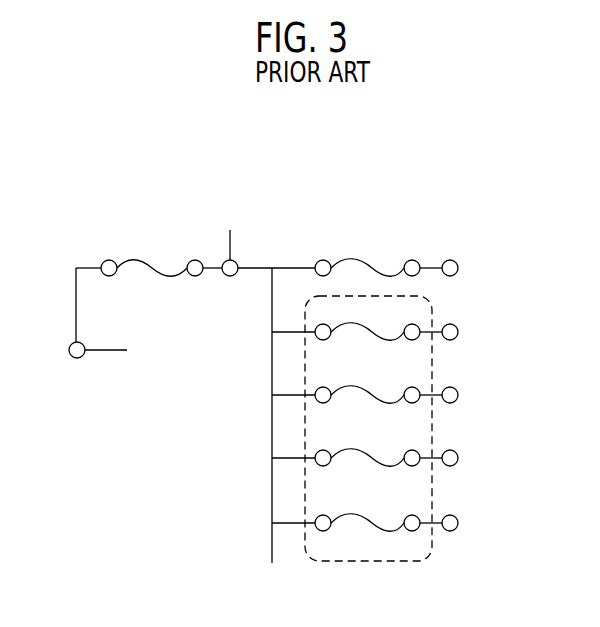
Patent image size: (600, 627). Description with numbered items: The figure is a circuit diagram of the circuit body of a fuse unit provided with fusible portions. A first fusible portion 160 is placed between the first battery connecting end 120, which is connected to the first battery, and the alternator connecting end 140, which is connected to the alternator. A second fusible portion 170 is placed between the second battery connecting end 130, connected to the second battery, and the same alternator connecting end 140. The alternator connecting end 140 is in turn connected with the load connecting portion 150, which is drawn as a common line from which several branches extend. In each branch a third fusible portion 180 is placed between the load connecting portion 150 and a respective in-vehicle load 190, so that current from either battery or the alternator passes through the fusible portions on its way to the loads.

The first battery connecting end 120 is at (77, 359).
The second battery connecting end 130 is at (458, 268).
The alternator connecting end 140 is at (228, 278).
The load connecting portion 150 is at (272, 436).
The first fusible portion 160 is at (157, 267).
The second fusible portion 170 is at (373, 267).
The third fusible portions 180 is at (388, 341).
The in-vehicle loads 190 is at (458, 332).